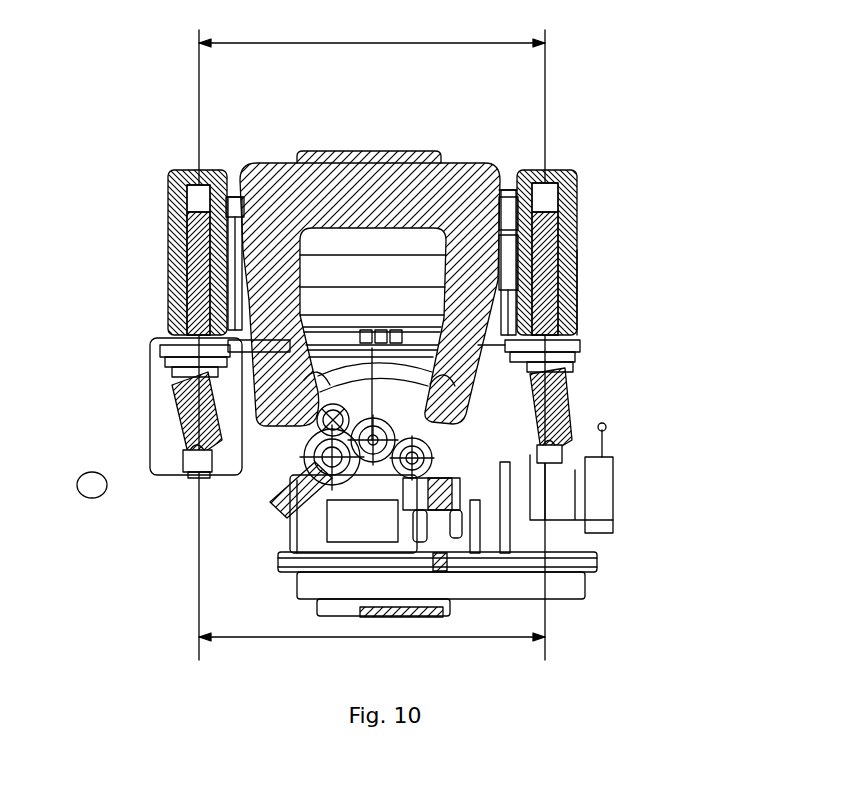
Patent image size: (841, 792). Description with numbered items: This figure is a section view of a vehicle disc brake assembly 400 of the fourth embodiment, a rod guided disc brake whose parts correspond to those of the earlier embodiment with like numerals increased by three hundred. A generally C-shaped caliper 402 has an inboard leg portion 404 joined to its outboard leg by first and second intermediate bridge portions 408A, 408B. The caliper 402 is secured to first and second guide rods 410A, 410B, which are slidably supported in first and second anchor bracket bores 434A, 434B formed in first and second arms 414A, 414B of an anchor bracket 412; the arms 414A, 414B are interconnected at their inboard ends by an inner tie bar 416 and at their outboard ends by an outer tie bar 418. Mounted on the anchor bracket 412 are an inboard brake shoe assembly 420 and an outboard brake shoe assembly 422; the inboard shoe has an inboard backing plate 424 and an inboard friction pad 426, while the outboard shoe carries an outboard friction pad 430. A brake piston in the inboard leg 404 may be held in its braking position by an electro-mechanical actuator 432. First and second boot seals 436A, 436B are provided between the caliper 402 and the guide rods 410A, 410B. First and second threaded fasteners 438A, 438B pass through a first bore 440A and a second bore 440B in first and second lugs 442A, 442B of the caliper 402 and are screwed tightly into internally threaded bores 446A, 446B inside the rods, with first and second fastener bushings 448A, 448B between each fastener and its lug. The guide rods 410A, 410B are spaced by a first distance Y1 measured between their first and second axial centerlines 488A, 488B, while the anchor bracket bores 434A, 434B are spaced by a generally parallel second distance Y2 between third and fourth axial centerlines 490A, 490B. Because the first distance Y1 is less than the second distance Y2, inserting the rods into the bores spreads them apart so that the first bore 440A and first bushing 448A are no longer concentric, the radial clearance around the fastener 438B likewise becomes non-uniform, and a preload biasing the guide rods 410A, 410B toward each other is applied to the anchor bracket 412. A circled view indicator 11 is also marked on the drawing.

The vehicle disc brake assembly 400 is at (428, 114).
The caliper 402 is at (513, 135).
The inboard leg portion 404 is at (300, 418).
The first intermediate bridge portion 408A is at (236, 197).
The second intermediate bridge portion 408B is at (482, 160).
The first guide rod 410A is at (172, 200).
The second guide rod 410B is at (577, 240).
The anchor bracket 412 is at (490, 447).
The first arm 414A is at (172, 260).
The second arm 414B is at (560, 215).
The inner tie bar 416 is at (577, 300).
The outer tie bar 418 is at (540, 170).
The inboard brake shoe assembly 420 is at (393, 303).
The outboard brake shoe assembly 422 is at (366, 240).
The inboard backing plate 424 is at (302, 300).
The inboard friction pad 426 is at (329, 240).
The outboard friction pad 430 is at (348, 297).
The electro-mechanical actuator 432 is at (443, 620).
The first anchor bracket bore 434A is at (192, 185).
The second anchor bracket bore 434B is at (560, 185).
The first boot seal 436A is at (160, 345).
The second boot seal 436B is at (580, 352).
The first threaded fastener 438A is at (185, 475).
The second threaded fastener 438B is at (615, 470).
The first bore 440A is at (175, 405).
The second bore 440B is at (570, 445).
The first lug 442A is at (178, 427).
The second lug 442B is at (575, 415).
The first internally threaded bore 446A is at (180, 372).
The second internally threaded bore 446B is at (575, 378).
The first fastener bushing 448A is at (232, 478).
The second fastener bushing 448B is at (512, 572).
The first axial centerline 488A is at (197, 598).
The second axial centerline 488B is at (546, 605).
The third axial centerline 490A is at (198, 62).
The fourth axial centerline 490B is at (546, 55).
The reference to FIG. 11 is at (148, 474).
The first distance Y1 is at (380, 640).
The second distance Y2 is at (370, 43).